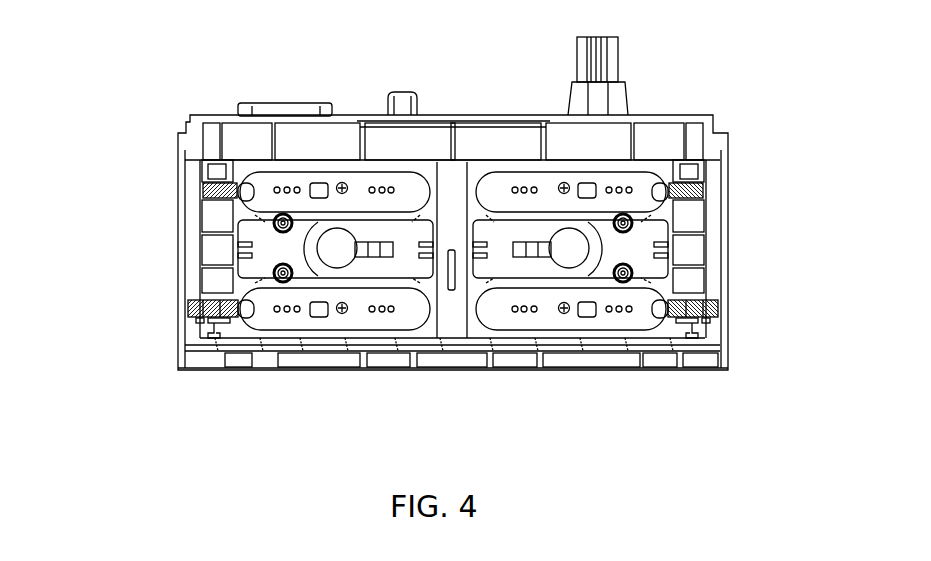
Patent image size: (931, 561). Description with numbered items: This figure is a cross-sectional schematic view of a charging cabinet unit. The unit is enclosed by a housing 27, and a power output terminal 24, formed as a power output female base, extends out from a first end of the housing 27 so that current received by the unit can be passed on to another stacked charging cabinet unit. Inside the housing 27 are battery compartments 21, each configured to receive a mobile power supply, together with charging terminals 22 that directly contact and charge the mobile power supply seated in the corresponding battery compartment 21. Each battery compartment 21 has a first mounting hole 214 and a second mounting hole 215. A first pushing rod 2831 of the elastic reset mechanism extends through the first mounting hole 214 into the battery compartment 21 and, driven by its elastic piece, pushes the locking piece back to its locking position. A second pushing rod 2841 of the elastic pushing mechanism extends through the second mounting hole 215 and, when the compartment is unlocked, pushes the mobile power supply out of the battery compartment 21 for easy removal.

The battery compartment 21 is at (370, 322).
The charging terminal 22 is at (287, 312).
The power output terminal 24 is at (618, 98).
The housing 27 is at (178, 268).
The first mounting hole 214 is at (625, 273).
The second mounting hole 215 is at (562, 186).
The first pushing rod 2831 is at (283, 223).
The second pushing rod 2841 is at (342, 186).